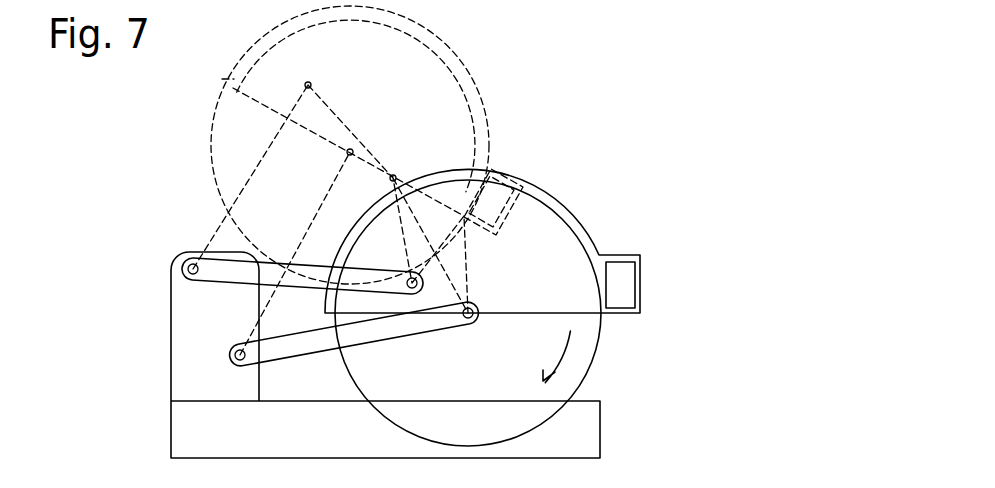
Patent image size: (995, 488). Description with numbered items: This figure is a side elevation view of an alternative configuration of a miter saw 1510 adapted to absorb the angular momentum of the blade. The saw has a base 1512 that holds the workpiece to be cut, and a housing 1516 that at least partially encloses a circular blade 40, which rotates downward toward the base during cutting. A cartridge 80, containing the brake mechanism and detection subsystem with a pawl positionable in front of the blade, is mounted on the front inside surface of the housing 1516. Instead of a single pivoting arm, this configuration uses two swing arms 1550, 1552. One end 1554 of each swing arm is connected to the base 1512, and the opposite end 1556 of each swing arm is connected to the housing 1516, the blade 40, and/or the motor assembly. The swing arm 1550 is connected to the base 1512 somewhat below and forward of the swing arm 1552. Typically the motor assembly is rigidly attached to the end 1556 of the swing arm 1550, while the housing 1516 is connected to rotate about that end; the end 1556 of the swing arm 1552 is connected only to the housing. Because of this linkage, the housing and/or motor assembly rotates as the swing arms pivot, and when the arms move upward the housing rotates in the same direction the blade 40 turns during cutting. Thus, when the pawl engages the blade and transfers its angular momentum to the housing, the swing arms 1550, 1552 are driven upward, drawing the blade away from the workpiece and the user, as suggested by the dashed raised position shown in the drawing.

The miter saw 1510 is at (578, 83).
The base 1512 is at (170, 388).
The housing 1516 is at (577, 215).
The cartridge 80 is at (620, 272).
The circular blade 40 is at (595, 360).
The swing arm 1550 is at (322, 353).
The swing arm 1552 is at (245, 283).
The end 1554 is at (232, 355).
The end 1556 is at (475, 307).